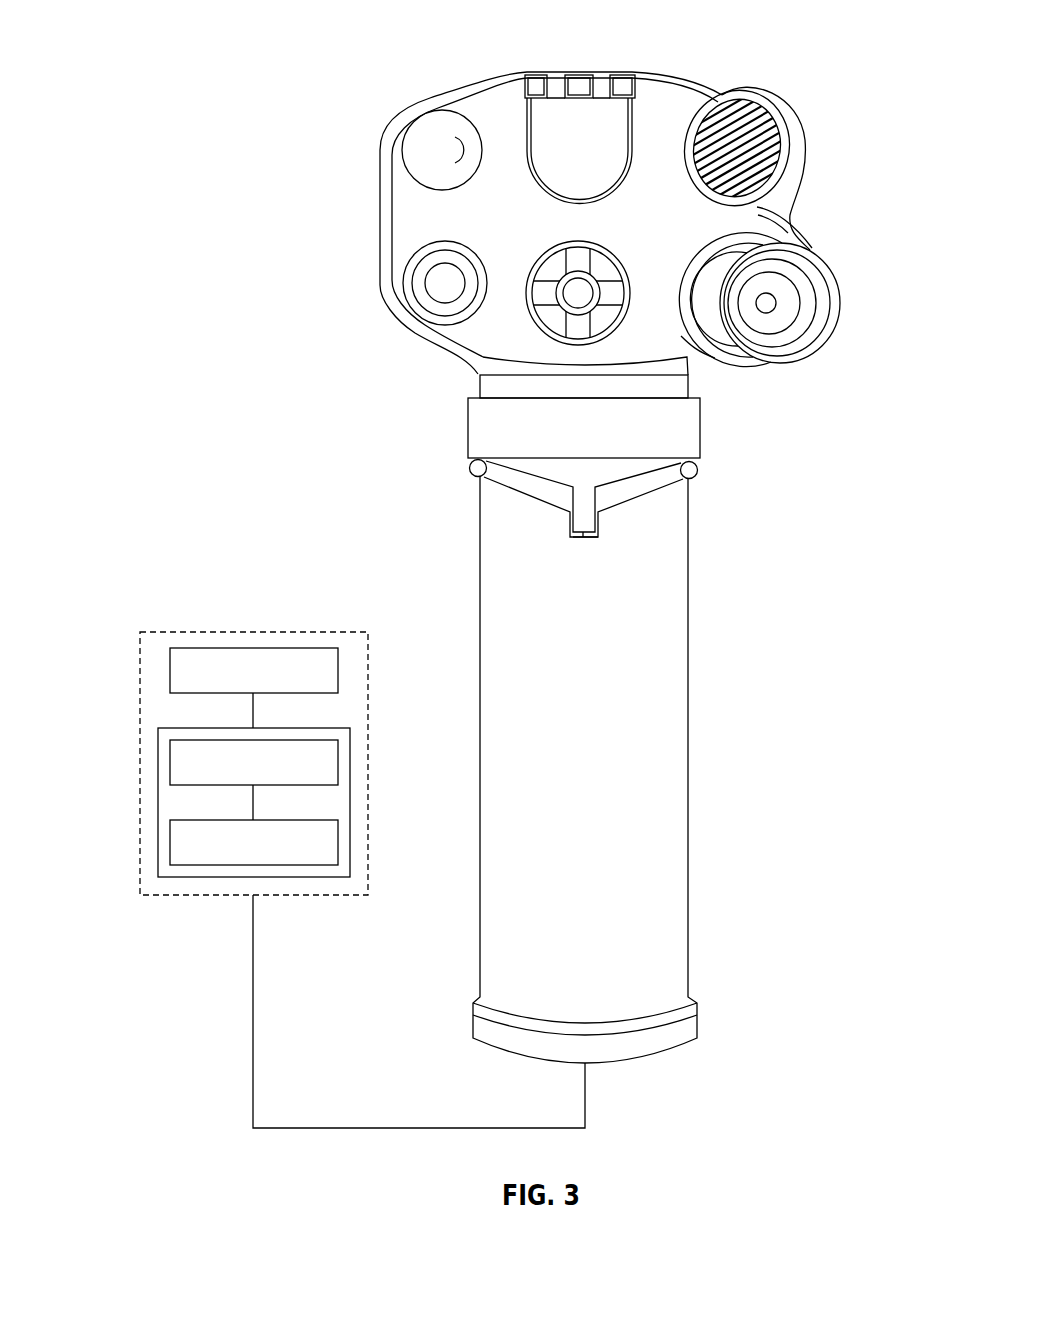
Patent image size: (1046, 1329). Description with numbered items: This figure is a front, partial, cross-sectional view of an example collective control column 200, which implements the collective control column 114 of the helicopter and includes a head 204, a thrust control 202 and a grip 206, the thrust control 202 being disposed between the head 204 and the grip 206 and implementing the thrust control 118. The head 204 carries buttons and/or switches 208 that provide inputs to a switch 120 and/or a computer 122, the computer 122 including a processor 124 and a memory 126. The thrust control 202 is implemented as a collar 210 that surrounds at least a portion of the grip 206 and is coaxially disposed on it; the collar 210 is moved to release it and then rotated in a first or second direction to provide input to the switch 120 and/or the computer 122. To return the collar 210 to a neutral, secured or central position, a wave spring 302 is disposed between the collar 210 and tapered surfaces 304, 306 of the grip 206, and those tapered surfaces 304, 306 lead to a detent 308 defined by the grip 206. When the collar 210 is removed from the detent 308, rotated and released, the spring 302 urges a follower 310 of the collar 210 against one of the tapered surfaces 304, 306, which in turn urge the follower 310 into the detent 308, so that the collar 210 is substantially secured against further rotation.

The collective control column 200 is at (565, 572).
The collective control column 114 is at (410, 82).
The head 204 is at (762, 52).
The buttons and/or switches 208 is at (750, 148).
The thrust control 202 is at (528, 749).
The thrust control 118 is at (448, 400).
The collar 210 is at (713, 422).
The wave spring 302 is at (470, 470).
The tapered surface 304 is at (648, 495).
The tapered surface 306 is at (510, 493).
The detent 308 is at (578, 538).
The follower 310 is at (582, 538).
The grip 206 is at (673, 827).
The switch 120 is at (170, 672).
The computer 122 is at (158, 800).
The processor 124 is at (170, 763).
The memory 126 is at (170, 843).